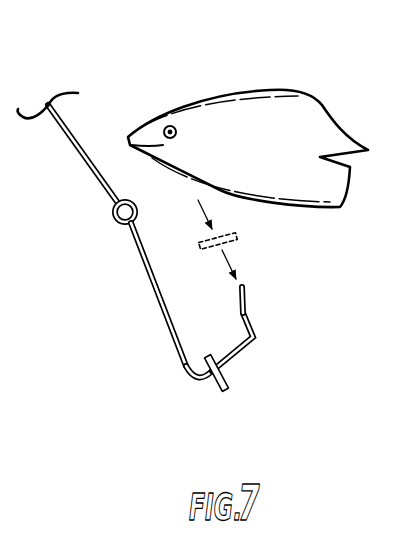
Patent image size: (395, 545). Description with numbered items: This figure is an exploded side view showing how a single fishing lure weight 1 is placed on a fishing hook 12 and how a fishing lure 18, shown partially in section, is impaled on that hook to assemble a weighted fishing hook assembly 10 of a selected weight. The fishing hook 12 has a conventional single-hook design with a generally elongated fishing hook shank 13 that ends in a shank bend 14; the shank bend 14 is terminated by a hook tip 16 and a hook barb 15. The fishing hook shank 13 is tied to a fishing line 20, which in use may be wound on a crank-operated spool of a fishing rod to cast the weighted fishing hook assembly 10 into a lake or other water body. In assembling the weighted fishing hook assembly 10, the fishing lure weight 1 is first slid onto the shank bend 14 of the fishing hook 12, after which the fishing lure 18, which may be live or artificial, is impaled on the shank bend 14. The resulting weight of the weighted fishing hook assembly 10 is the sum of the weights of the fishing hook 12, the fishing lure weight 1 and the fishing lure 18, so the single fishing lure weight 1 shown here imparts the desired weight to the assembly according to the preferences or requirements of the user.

The fishing lure weight 1 is at (207, 388).
The weighted fishing hook assembly 10 is at (154, 62).
The fishing hook 12 is at (150, 292).
The fishing hook shank 13 is at (132, 242).
The shank bend 14 is at (237, 365).
The hook barb 15 is at (240, 320).
The hook tip 16 is at (245, 287).
The fishing lure 18 is at (282, 107).
The fishing line 20 is at (63, 133).